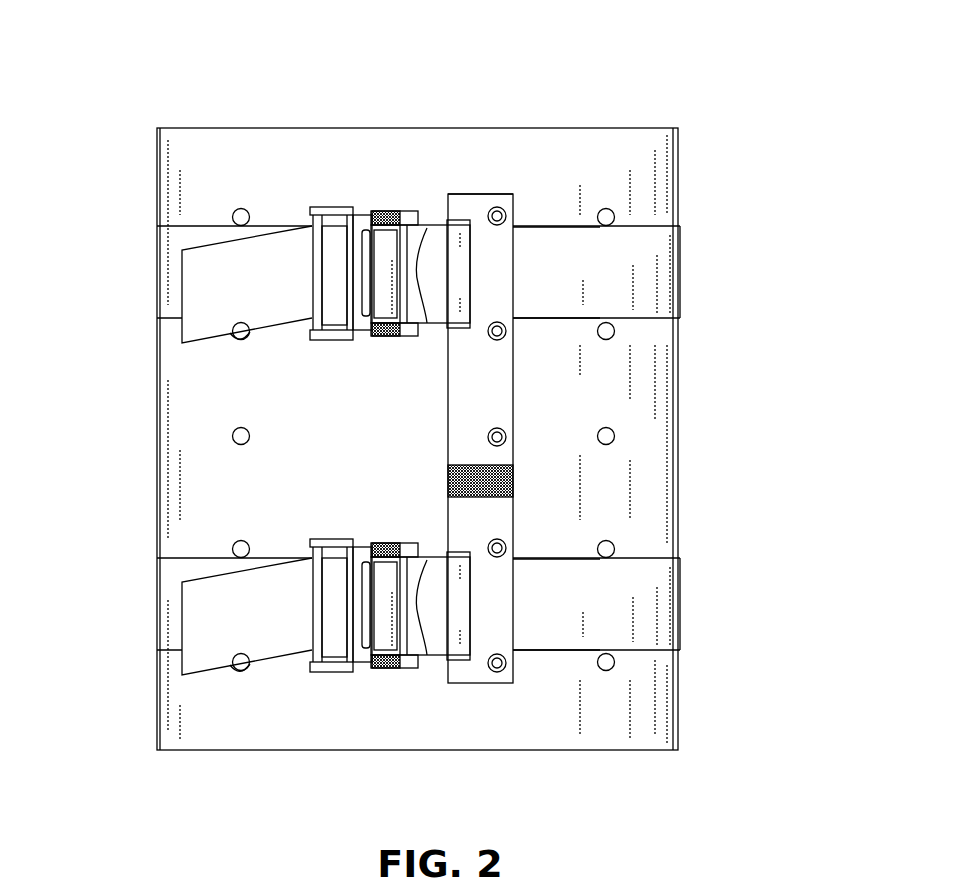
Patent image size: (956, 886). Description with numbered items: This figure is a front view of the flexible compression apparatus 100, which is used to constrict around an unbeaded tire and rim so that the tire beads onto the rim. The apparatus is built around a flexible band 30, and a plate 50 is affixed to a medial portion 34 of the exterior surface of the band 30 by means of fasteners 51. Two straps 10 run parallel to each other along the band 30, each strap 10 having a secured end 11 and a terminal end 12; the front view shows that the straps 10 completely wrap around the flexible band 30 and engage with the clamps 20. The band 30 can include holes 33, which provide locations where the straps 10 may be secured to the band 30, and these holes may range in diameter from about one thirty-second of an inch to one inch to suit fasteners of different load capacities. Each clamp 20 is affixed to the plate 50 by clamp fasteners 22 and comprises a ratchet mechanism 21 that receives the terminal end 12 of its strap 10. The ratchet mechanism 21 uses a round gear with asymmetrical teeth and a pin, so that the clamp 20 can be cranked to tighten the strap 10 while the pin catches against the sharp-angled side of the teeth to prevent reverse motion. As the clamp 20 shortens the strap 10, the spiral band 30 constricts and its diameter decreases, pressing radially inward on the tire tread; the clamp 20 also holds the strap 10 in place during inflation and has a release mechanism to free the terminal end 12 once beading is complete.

The flexible compression apparatus 100 is at (412, 39).
The strap 10 is at (682, 266).
The secured end 11 is at (517, 268).
The terminal end 12 is at (188, 610).
The clamp 20 is at (305, 448).
The ratchet mechanism 21 is at (383, 208).
The clamp fasteners 22 is at (459, 215).
The flexible band 30 is at (678, 393).
The holes 33 is at (617, 437).
The medial portion 34 is at (493, 165).
The plate 50 is at (478, 683).
The fasteners 51 is at (500, 212).